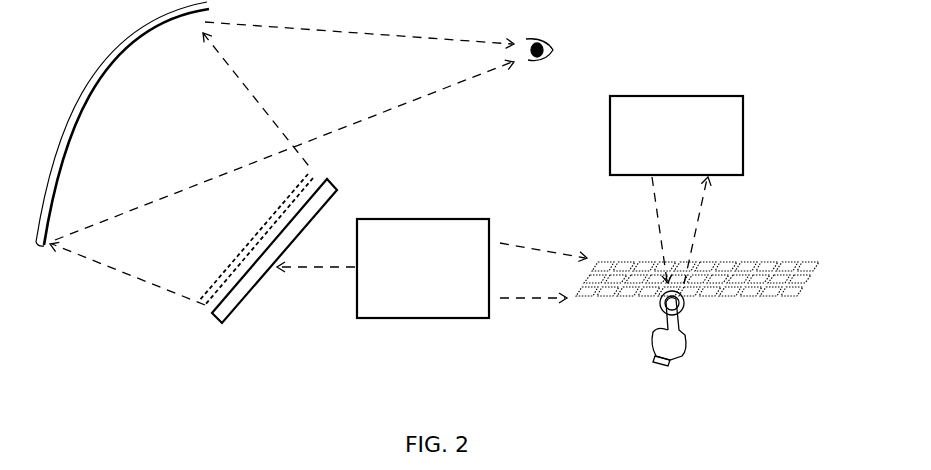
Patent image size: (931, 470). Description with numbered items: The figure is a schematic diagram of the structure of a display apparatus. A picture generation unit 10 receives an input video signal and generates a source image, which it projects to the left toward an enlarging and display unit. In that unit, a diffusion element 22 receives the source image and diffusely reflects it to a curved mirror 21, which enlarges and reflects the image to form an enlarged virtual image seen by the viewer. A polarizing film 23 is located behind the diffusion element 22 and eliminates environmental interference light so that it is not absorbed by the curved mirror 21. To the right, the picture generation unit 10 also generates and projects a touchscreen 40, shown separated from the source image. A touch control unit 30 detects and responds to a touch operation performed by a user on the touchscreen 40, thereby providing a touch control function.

The picture generation unit 10 is at (423, 268).
The curved mirror 21 is at (92, 83).
The diffusion element 22 is at (237, 319).
The polarizing film 23 is at (205, 306).
The touch control unit 30 is at (676, 135).
The touchscreen 40 is at (798, 262).